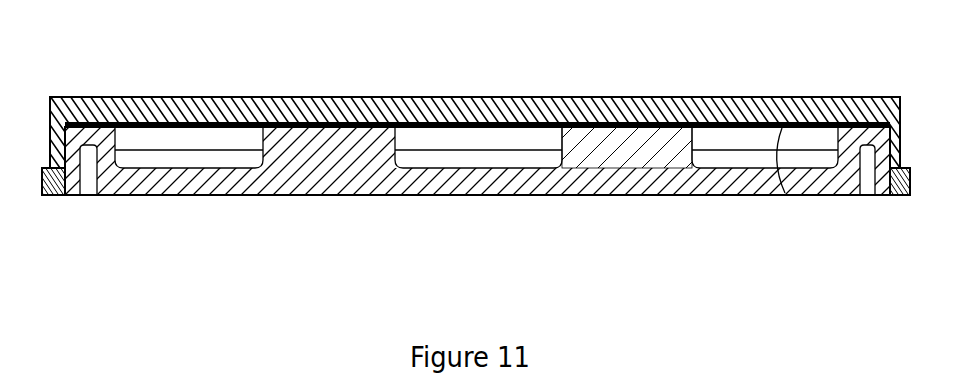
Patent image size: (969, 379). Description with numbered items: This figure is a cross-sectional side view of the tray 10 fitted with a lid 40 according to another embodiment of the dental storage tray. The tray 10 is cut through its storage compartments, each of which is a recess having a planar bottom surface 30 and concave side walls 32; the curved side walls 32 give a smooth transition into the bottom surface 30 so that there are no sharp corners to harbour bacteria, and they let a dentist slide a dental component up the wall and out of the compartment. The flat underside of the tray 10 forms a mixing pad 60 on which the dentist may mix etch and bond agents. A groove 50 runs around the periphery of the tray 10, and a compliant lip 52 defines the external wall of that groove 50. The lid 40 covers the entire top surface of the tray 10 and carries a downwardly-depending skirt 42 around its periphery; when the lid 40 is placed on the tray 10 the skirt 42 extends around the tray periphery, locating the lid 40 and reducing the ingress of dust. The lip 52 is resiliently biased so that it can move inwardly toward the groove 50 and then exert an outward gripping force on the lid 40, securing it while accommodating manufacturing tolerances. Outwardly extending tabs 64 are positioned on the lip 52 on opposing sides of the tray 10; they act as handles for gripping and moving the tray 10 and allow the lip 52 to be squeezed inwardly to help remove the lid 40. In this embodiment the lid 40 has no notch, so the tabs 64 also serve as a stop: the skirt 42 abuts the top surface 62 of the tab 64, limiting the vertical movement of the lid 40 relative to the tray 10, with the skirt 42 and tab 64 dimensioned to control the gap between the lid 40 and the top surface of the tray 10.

The tray 10 is at (292, 195).
The planar bottom surface 30 is at (732, 170).
The concave side walls 32 is at (690, 157).
The lid 40 is at (712, 100).
The skirt 42 is at (67, 124).
The groove 50 is at (92, 197).
The compliant lip 52 is at (880, 193).
The mixing pad 60 is at (350, 195).
The top surface 62 is at (47, 168).
The outwardly extending tabs 64 is at (56, 197).